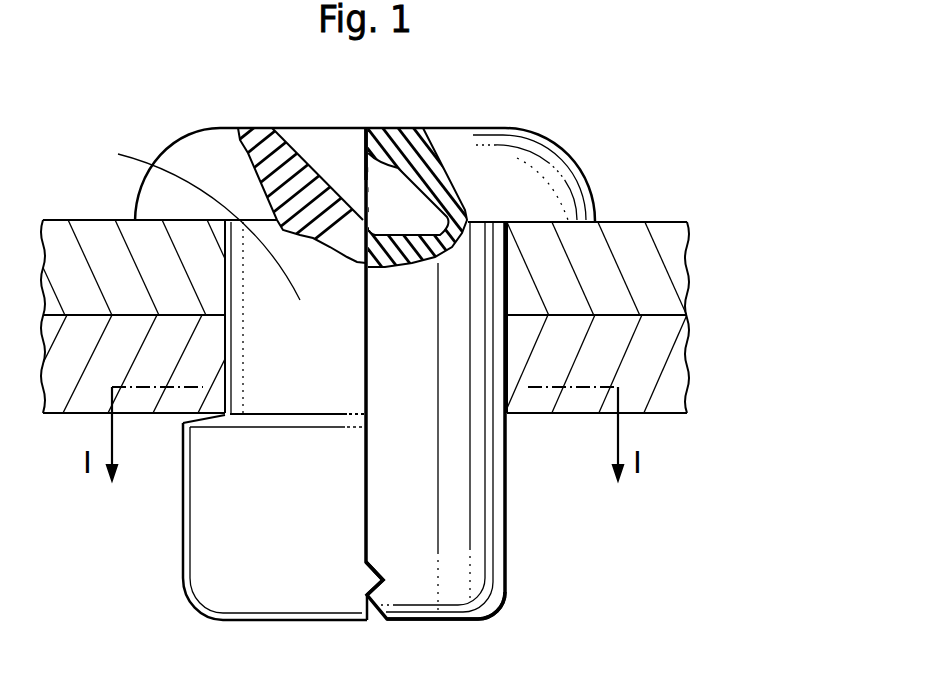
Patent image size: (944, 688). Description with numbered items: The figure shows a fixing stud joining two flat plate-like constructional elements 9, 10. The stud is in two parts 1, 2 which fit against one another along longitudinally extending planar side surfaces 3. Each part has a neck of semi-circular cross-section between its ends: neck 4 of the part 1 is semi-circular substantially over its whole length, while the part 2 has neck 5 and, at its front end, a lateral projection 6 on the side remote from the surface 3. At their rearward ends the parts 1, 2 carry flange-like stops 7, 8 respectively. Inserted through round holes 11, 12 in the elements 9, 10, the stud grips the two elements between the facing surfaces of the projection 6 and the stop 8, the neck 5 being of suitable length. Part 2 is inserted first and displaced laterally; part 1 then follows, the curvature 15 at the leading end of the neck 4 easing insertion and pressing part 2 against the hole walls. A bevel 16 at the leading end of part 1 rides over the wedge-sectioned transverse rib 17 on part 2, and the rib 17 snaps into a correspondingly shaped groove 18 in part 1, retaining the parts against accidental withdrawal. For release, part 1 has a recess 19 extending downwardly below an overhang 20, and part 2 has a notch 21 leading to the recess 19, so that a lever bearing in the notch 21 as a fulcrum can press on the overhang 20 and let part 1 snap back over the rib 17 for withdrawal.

The part 1 is at (515, 518).
The part 2 is at (165, 525).
The planar side surface 3 is at (366, 477).
The neck 4 is at (448, 313).
The neck 5 is at (150, 164).
The lateral projection 6 is at (203, 472).
The flange-like stop 7 is at (553, 207).
The flange-like stop 8 is at (157, 204).
The constructional element 9 is at (75, 260).
The constructional element 10 is at (78, 377).
The round hole 11 is at (228, 268).
The round hole 12 is at (503, 349).
The curvature 15 is at (502, 600).
The bevel 16 is at (378, 617).
The transverse rib 17 is at (365, 575).
The groove 18 is at (381, 592).
The recess 19 is at (403, 210).
The overhang 20 is at (363, 157).
The notch 21 is at (330, 170).